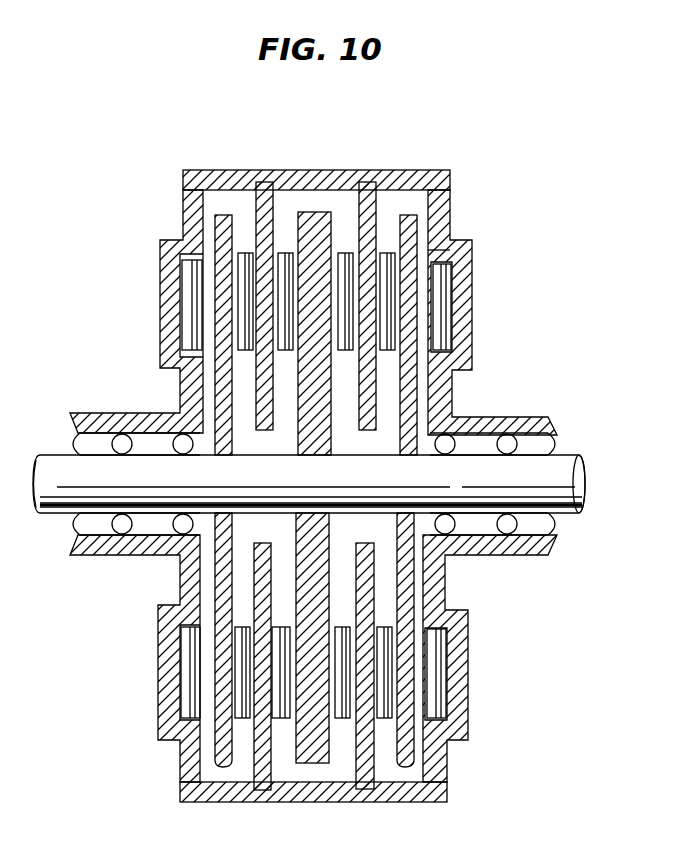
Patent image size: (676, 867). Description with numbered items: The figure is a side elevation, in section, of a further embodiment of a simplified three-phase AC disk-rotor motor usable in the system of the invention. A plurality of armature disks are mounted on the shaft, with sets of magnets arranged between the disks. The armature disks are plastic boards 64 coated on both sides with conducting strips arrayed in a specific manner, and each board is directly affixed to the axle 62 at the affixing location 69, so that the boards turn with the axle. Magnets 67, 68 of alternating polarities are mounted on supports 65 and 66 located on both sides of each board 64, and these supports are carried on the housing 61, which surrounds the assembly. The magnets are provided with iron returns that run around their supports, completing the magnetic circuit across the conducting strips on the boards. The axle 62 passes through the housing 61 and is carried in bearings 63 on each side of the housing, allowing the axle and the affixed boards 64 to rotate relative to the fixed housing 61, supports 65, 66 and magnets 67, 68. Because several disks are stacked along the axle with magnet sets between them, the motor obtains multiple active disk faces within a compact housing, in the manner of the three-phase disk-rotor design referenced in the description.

The housing 61 is at (458, 290).
The axle 62 is at (562, 470).
The bearings 63 is at (507, 443).
The plastic boards 64 is at (368, 182).
The support 65 is at (243, 225).
The support 66 is at (365, 230).
The magnets 67 is at (290, 310).
The magnets 68 is at (345, 330).
The affixing location 69 is at (297, 530).